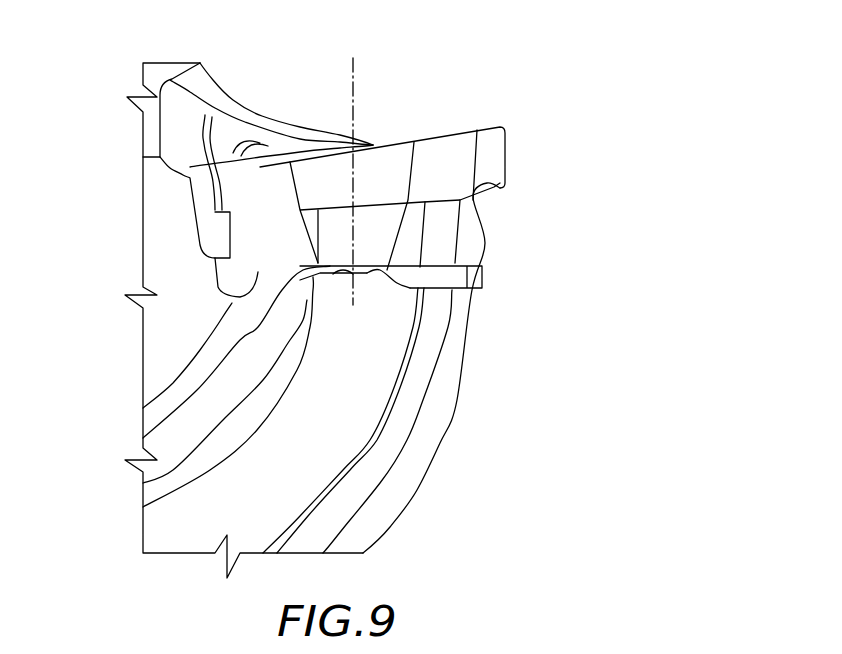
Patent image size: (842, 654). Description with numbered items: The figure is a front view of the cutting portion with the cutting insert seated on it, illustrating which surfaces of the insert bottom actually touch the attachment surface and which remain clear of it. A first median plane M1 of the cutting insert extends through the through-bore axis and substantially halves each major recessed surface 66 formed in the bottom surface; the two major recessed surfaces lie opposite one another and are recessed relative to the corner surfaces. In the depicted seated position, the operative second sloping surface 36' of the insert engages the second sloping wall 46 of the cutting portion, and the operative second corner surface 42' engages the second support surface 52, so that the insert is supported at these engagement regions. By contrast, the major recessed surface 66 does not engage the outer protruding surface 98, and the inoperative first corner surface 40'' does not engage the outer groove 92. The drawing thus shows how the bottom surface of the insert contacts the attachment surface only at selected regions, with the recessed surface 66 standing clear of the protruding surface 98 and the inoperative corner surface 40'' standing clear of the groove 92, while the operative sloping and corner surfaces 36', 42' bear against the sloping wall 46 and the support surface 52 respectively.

The first median plane M1 is at (358, 160).
The second sloping wall 46 is at (260, 188).
The major recessed surface 66 is at (414, 142).
The inoperative first corner surface 40'' is at (152, 206).
The outer groove 92 is at (227, 303).
The operative second sloping surface 36' is at (190, 386).
The second support surface 52 is at (467, 268).
The operative second corner surface 42' is at (439, 368).
The outer protruding surface 98 is at (333, 273).